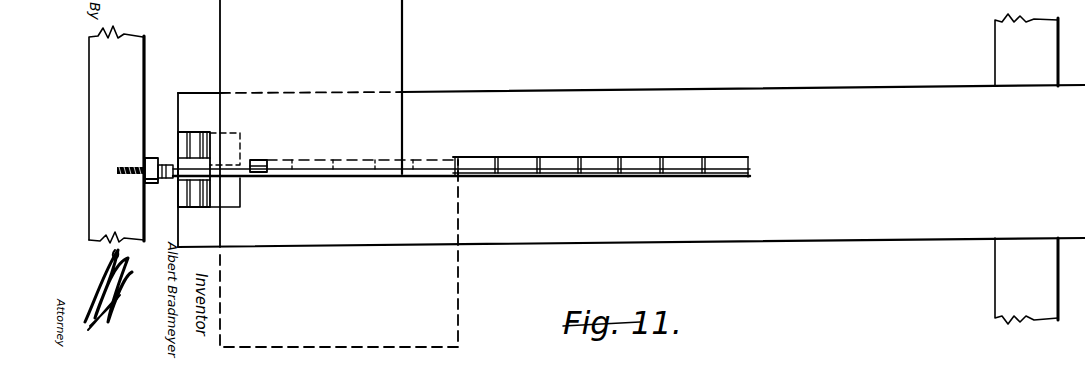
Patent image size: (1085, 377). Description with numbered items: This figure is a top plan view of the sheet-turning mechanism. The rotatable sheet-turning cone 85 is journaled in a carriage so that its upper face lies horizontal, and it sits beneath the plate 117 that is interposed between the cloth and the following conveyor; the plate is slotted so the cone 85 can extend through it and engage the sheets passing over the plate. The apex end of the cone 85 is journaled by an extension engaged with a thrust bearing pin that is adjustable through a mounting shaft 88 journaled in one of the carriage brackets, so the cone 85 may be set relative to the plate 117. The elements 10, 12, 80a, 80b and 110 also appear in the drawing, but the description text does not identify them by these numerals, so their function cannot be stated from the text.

The wall plate 10 is at (90, 64).
The bracket 12 is at (1046, 42).
The threaded shaft end 80a is at (120, 165).
The nut 80b is at (151, 158).
The sheet-turning cone 85 is at (728, 172).
The mounting shaft 88 is at (186, 165).
The rack 110 is at (716, 157).
The plate 117 is at (910, 92).